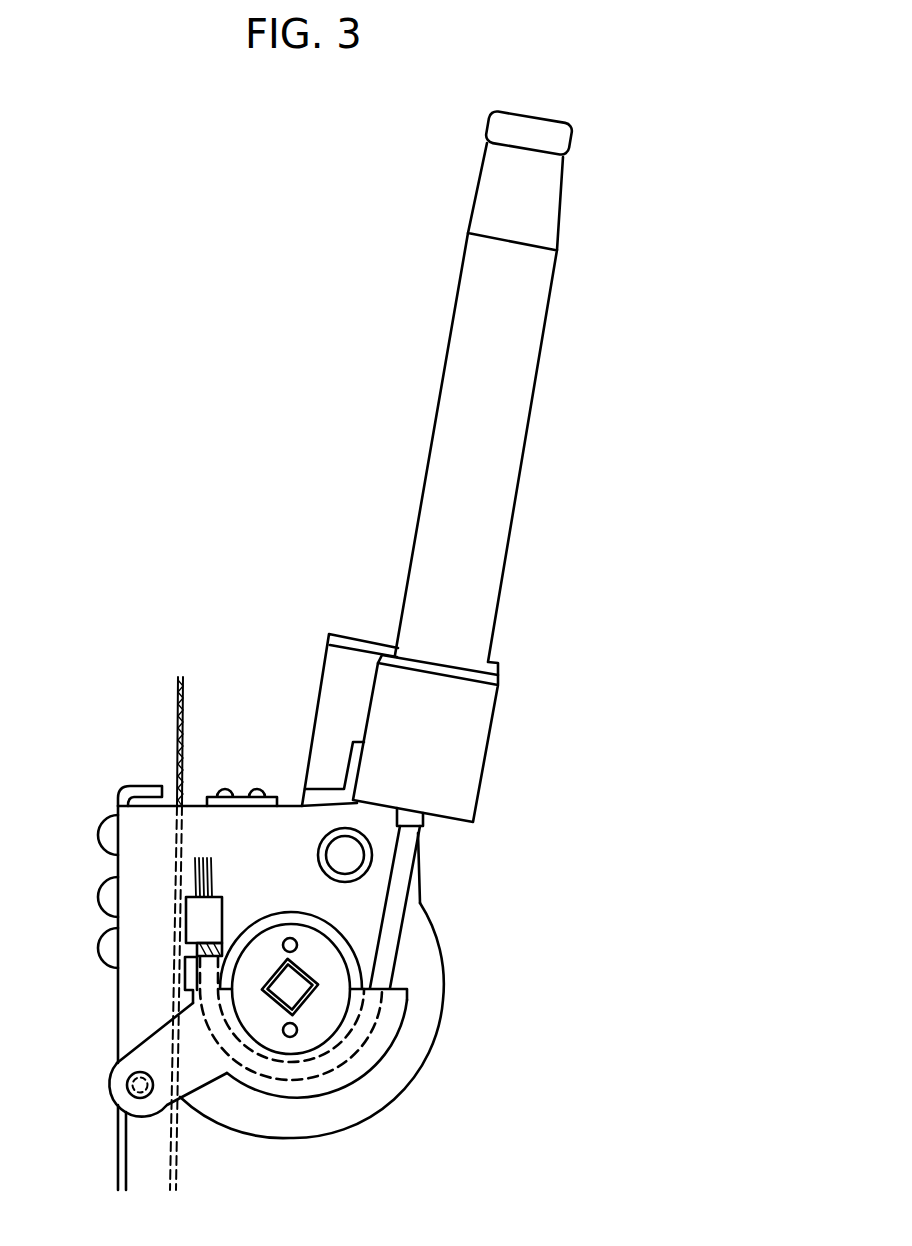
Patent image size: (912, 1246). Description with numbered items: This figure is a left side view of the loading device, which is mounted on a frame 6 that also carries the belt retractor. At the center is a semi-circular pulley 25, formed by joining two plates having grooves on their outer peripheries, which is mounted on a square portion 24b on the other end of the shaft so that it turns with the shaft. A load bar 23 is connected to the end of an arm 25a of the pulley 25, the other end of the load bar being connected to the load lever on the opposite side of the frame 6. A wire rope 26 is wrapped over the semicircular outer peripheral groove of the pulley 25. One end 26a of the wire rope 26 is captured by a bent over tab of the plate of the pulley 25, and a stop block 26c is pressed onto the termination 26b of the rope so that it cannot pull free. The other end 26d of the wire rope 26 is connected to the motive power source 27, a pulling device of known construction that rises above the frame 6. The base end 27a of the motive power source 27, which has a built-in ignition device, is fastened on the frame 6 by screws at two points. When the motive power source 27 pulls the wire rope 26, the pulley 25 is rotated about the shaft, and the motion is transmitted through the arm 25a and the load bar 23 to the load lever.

The motive power source 27 is at (492, 570).
The base end 27a is at (482, 733).
The frame 6 is at (427, 1002).
The wire rope 26 is at (393, 945).
The other end of wire rope 26d is at (410, 837).
The termination 26b is at (197, 882).
The stop block 26c is at (193, 928).
The one end of wire rope 26a is at (187, 977).
The arm of pulley 25a is at (138, 1058).
The load bar 23 is at (132, 1095).
The semi-circular pulley 25 is at (307, 1098).
The square portion 24b is at (300, 993).